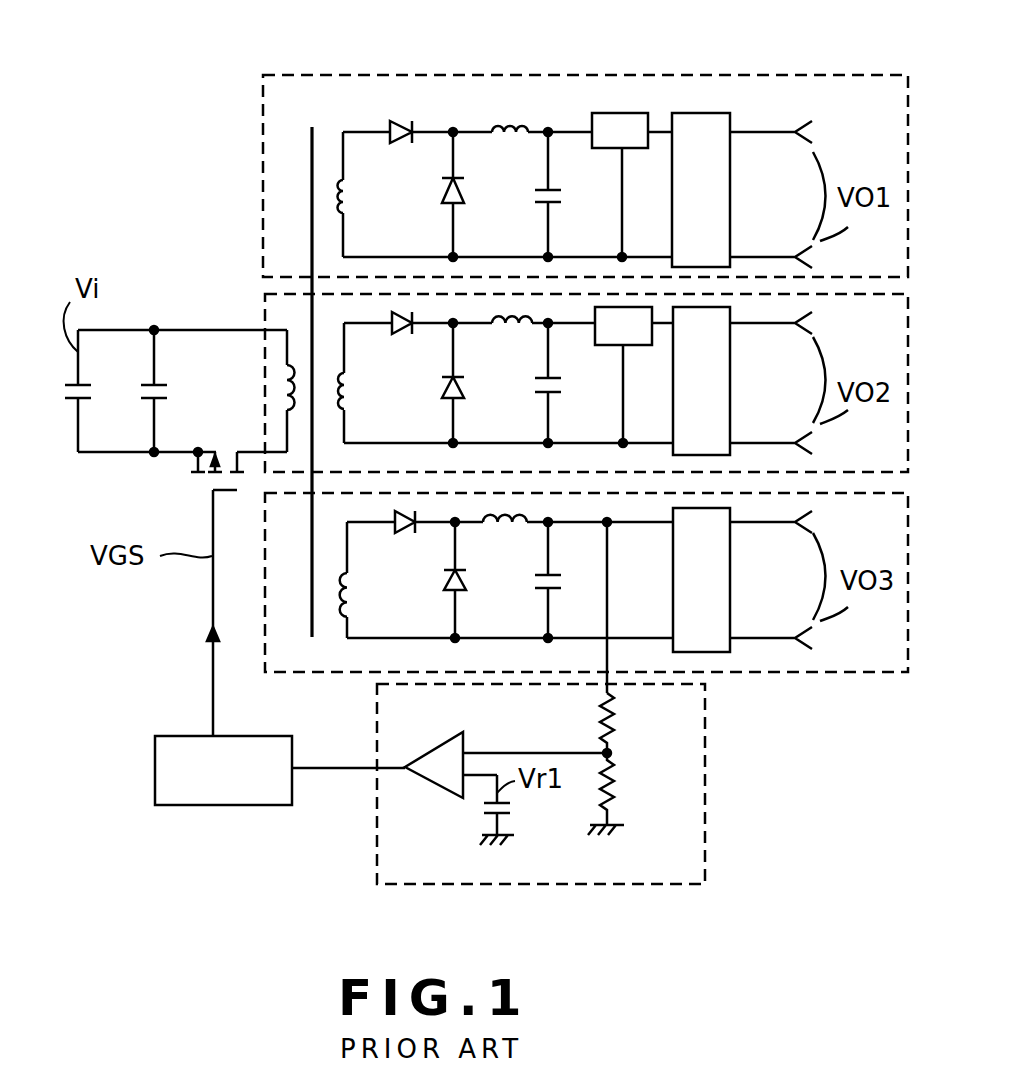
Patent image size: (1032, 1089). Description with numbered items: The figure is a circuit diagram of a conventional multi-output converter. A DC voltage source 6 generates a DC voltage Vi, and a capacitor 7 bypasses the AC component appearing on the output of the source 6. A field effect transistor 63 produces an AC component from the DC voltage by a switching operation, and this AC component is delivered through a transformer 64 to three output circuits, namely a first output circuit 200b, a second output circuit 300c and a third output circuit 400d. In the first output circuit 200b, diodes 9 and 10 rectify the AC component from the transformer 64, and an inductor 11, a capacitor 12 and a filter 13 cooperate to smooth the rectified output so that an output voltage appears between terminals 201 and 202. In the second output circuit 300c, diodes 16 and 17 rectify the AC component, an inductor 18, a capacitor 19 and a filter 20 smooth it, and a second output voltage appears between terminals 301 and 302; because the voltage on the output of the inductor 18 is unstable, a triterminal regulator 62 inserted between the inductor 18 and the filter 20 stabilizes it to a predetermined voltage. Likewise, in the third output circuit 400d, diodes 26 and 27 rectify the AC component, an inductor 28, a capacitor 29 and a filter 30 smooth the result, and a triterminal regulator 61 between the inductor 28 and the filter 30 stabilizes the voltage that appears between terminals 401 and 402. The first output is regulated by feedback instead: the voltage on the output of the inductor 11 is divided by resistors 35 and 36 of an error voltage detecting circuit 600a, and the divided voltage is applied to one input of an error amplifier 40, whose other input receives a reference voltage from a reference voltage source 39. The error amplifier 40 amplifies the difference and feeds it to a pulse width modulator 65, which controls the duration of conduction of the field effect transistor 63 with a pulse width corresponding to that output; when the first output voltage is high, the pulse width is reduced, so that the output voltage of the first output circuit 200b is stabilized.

The DC voltage source 6 is at (94, 390).
The capacitor 7 is at (171, 394).
The field effect transistor 63 is at (197, 456).
The transformer 64 is at (310, 224).
The pulse width modulator 65 is at (232, 806).
The diode 26 is at (392, 128).
The diode 27 is at (440, 198).
The inductor 28 is at (492, 128).
The capacitor 29 is at (528, 194).
The triterminal regulator 61 is at (592, 126).
The filter 30 is at (730, 176).
The terminal 401 is at (808, 130).
The terminal 402 is at (808, 255).
The first output circuit 400d is at (456, 73).
The diode 16 is at (397, 334).
The diode 17 is at (445, 390).
The inductor 18 is at (513, 330).
The capacitor 19 is at (530, 388).
The triterminal regulator 62 is at (598, 346).
The filter 20 is at (730, 366).
The terminal 301 is at (808, 321).
The terminal 302 is at (808, 441).
The second output circuit 300c is at (265, 306).
The diode 9 is at (408, 532).
The diode 10 is at (445, 590).
The inductor 11 is at (512, 528).
The capacitor 12 is at (580, 573).
The filter 13 is at (730, 561).
The terminal 201 is at (808, 520).
The terminal 202 is at (808, 636).
The first output circuit 200b is at (265, 610).
The resistor 35 is at (612, 722).
The resistor 36 is at (612, 790).
The reference voltage source 39 is at (515, 808).
The error amplifier 40 is at (432, 790).
The error voltage detecting circuit 600a is at (705, 712).